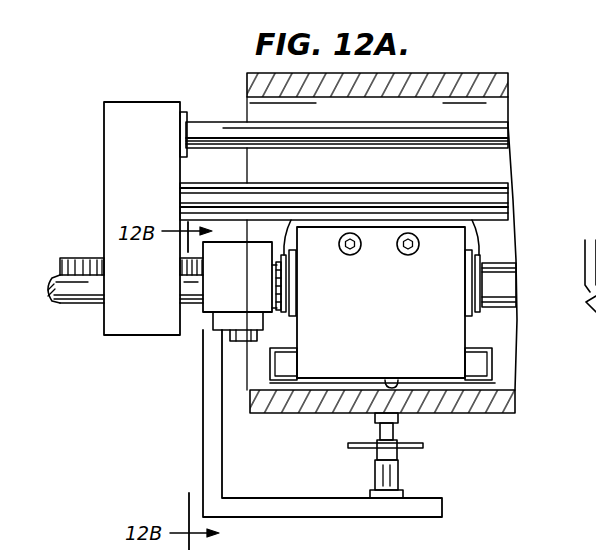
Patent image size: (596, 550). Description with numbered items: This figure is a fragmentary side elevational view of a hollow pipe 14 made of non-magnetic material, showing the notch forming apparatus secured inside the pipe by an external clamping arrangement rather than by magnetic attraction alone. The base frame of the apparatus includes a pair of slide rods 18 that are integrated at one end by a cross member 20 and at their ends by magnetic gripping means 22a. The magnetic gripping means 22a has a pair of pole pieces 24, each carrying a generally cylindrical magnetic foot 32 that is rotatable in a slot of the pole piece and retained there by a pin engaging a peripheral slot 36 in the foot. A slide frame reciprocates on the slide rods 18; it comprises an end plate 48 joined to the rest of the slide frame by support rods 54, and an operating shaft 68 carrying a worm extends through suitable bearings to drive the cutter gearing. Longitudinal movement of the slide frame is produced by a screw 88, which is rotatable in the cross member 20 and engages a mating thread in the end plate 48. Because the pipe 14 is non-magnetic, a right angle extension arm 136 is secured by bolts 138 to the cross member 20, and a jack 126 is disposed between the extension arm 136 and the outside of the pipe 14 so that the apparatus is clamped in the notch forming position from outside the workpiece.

The hollow pipe 14 is at (447, 73).
The operating shaft 68 is at (338, 134).
The support rods 54 is at (338, 191).
The end plate 48 is at (131, 113).
The slide rods 18 is at (84, 303).
The screw 88 is at (70, 258).
The cross member 20 is at (252, 289).
The bolts 138 is at (237, 340).
The right angle extension arm 136 is at (273, 496).
The pole pieces 24 is at (388, 312).
The magnetic gripping means 22a is at (455, 251).
The magnetic foot 32 is at (492, 366).
The peripheral slot 36 is at (401, 377).
The jack 126 is at (400, 471).